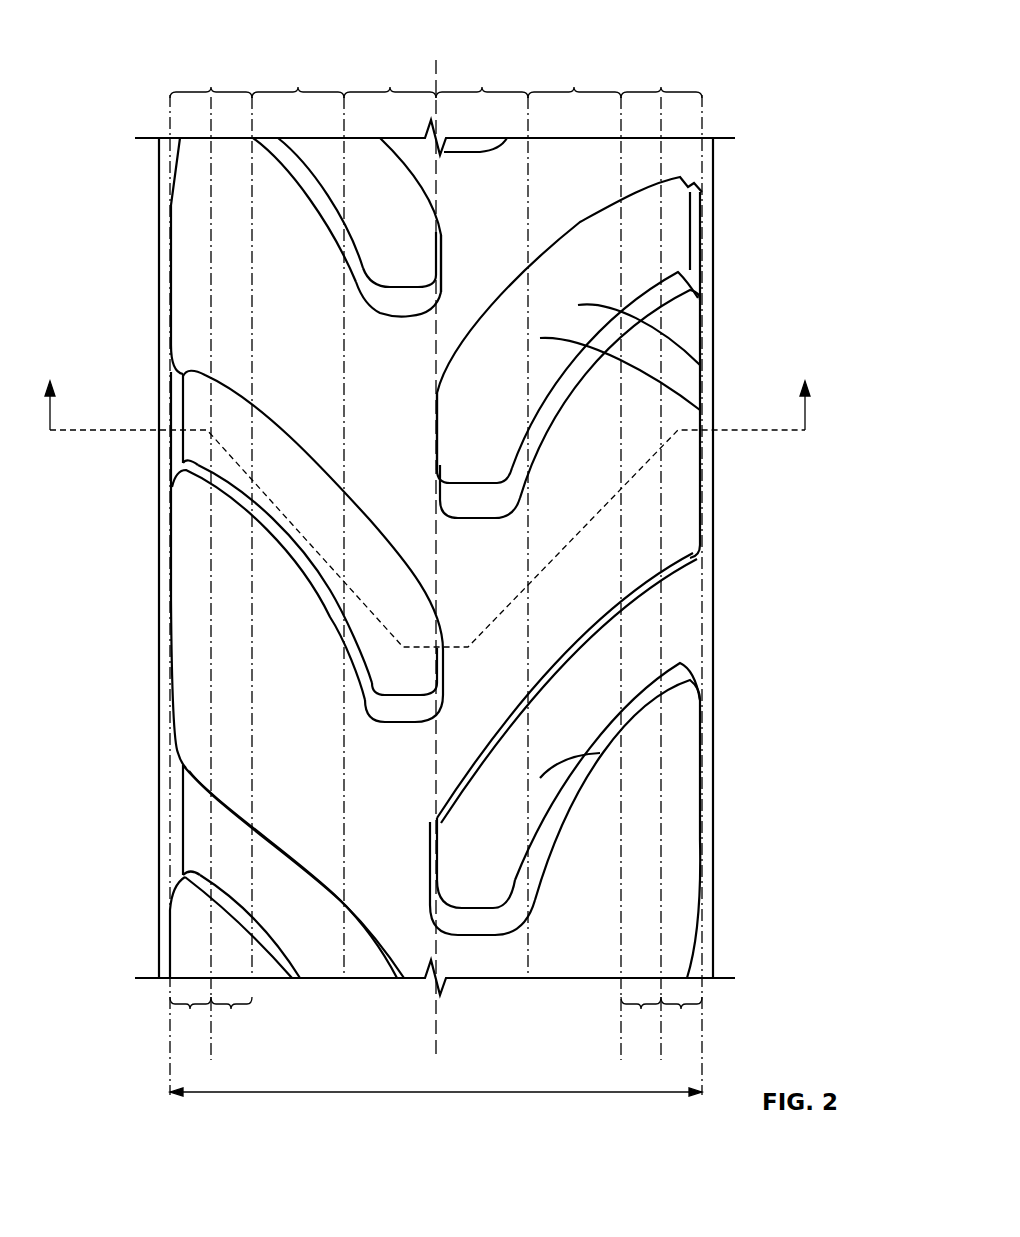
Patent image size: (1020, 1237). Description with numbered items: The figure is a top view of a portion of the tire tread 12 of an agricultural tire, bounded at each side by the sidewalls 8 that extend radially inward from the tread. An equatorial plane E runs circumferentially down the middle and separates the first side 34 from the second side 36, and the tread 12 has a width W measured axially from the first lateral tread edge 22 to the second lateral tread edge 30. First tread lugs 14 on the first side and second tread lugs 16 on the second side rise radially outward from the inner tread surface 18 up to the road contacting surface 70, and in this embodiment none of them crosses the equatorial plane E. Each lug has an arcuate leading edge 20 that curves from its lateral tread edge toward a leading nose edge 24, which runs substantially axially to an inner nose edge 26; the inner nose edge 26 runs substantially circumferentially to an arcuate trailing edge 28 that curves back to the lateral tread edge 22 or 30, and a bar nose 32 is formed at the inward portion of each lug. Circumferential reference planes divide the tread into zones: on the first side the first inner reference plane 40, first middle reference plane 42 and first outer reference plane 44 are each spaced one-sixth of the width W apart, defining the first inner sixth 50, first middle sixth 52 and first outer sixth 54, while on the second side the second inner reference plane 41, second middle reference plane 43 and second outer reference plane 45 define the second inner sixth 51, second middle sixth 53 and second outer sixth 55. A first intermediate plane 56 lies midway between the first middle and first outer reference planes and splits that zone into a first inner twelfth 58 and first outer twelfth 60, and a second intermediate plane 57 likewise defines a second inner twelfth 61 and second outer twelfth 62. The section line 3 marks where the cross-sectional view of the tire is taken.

The tire tread 12 is at (752, 115).
The sidewalls 8 is at (159, 233).
The second side 36 is at (246, 44).
The first side 34 is at (653, 44).
The second outer sixth 55 is at (211, 559).
The second middle sixth 53 is at (298, 78).
The second inner sixth 51 is at (390, 78).
The first inner sixth 50 is at (482, 78).
The first middle sixth 52 is at (574, 78).
The first outer sixth 54 is at (661, 559).
The second outer twelfth 62 is at (190, 1018).
The second inner twelfth 61 is at (231, 1018).
The first inner twelfth 58 is at (641, 1018).
The first outer twelfth 60 is at (681, 1018).
The second middle reference plane 43 is at (252, 320).
The second inner reference plane 41 is at (345, 382).
The equatorial plane E is at (435, 1008).
The first inner reference plane 40 is at (528, 227).
The first middle reference plane 42 is at (622, 169).
The tread width W is at (436, 1079).
The section line 3- 3 is at (427, 501).
The second outer reference plane 45 is at (172, 162).
The second tread lugs 16 is at (185, 397).
The second lateral tread edge 30 is at (173, 420).
The second intermediate plane 57 is at (210, 567).
The arcuate trailing edge 28 is at (515, 297).
The inner tread surface 18 is at (273, 263).
The arcuate leading edge 20 is at (540, 405).
The bar nose 32 is at (452, 432).
The inner nose edge 26 is at (433, 460).
The leading nose edge 24 is at (475, 500).
The first tread lugs 14 is at (700, 365).
The road contacting surface 70 is at (700, 410).
The first outer reference plane 44 is at (702, 227).
The first lateral tread edge 22 is at (693, 595).
The first intermediate plane 56 is at (661, 842).